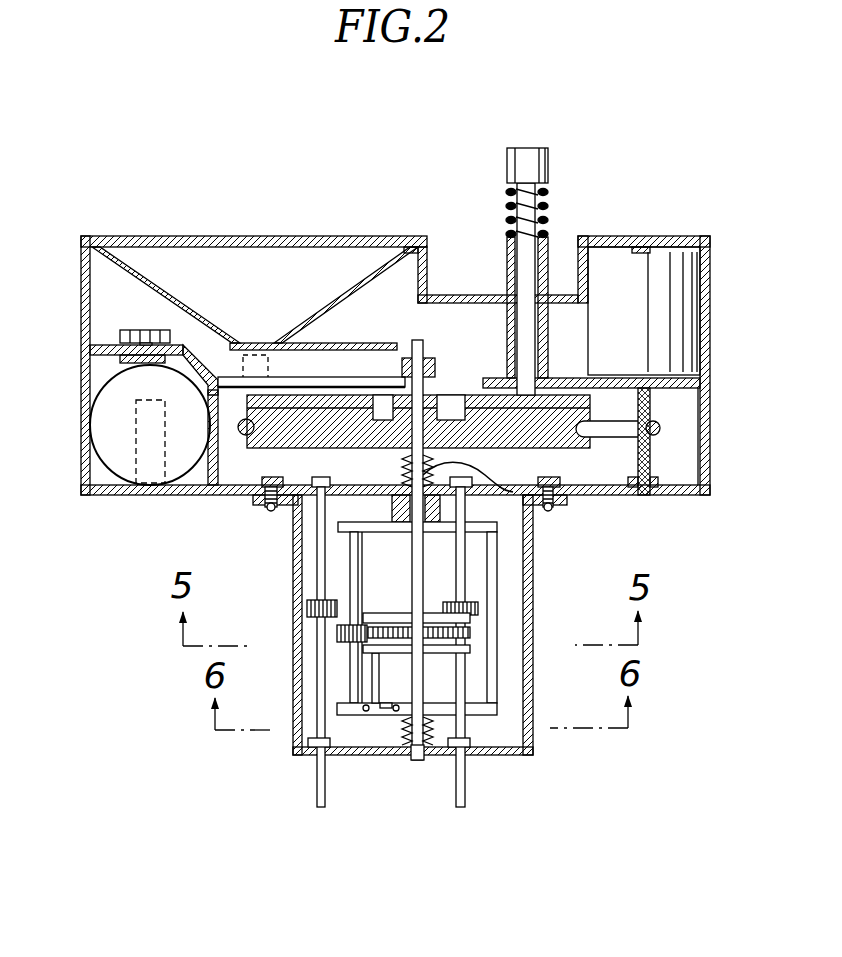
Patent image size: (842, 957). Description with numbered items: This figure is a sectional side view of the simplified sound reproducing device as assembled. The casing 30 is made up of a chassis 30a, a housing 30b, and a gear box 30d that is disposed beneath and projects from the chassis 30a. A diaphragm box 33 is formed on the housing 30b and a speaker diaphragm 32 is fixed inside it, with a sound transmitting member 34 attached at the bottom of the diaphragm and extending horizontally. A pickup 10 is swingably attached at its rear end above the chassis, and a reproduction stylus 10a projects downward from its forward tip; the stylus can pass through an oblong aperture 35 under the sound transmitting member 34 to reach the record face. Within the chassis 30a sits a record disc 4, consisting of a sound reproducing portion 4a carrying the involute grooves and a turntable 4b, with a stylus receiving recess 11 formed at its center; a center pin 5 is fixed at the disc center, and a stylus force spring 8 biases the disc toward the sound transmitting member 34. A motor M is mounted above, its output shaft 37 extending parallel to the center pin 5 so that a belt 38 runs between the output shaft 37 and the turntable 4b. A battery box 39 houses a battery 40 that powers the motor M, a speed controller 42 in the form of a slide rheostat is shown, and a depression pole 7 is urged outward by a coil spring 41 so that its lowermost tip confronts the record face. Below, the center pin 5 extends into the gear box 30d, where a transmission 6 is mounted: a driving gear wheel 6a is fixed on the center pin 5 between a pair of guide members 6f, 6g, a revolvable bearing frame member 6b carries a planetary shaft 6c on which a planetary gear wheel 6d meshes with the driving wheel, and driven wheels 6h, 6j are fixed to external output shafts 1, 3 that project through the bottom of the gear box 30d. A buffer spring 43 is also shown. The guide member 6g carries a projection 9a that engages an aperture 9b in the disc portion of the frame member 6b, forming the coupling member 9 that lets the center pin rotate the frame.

The external output shaft 1 is at (318, 805).
The external output shaft 3 is at (466, 804).
The record disc 4 is at (245, 453).
The sound reproducing portion 4a is at (590, 401).
The turntable 4b is at (581, 433).
The center pin 5 is at (424, 340).
The transmission 6 is at (500, 672).
The driving gear wheel 6a is at (470, 634).
The revolvable bearing frame member 6b is at (497, 707).
The planetary shaft 6c is at (348, 557).
The planetary gear wheel 6d is at (337, 634).
The guide member 6f is at (433, 612).
The guide member 6g is at (368, 656).
The driven wheel 6h is at (307, 603).
The driven wheel 6j is at (478, 608).
The depression pole 7 is at (548, 165).
The stylus force spring 8 is at (530, 513).
The coupling member 9 is at (366, 714).
The projection 9a is at (397, 716).
The aperture 9b is at (374, 716).
The pickup 10 is at (270, 357).
The reproduction stylus 10a is at (255, 391).
The stylus receiving recess 11 is at (381, 376).
The casing 30 is at (713, 377).
The chassis 30a is at (710, 444).
The housing 30b is at (710, 306).
The gear box 30d is at (533, 752).
The speaker diaphragm 32 is at (170, 293).
The diaphragm box 33 is at (82, 265).
The sound transmitting member 34 is at (350, 343).
The oblong aperture 35 is at (302, 385).
The output shaft 37 is at (653, 458).
The belt 38 is at (660, 432).
The battery box 39 is at (90, 345).
The battery 40 is at (105, 433).
The coil spring 41 is at (546, 201).
The speed controller 42 is at (127, 330).
The buffer spring 43 is at (427, 722).
The motor M is at (670, 263).